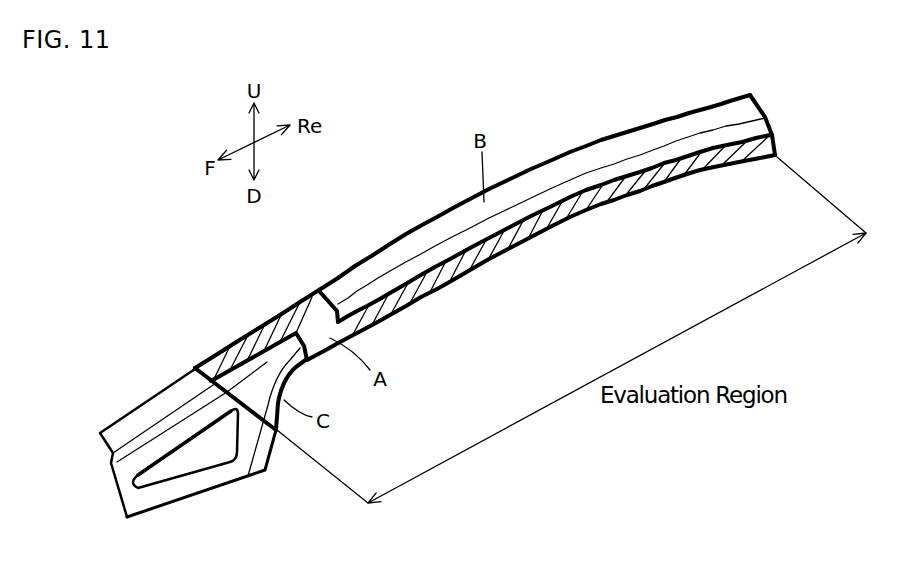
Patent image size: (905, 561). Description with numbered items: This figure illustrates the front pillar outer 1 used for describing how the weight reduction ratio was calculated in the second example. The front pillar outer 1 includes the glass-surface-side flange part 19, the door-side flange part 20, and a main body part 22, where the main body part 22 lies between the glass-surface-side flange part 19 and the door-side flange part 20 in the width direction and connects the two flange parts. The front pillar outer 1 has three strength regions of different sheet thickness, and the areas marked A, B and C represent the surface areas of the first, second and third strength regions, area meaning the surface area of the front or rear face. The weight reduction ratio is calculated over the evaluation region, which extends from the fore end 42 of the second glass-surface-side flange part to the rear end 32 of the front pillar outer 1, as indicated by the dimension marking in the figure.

The front pillar outer 1 is at (165, 227).
The glass-surface-side flange part 19 is at (342, 282).
The door-side flange part 20 is at (413, 288).
The main body part 22 is at (463, 237).
The rear end 32 is at (765, 112).
The fore end 42 is at (200, 378).